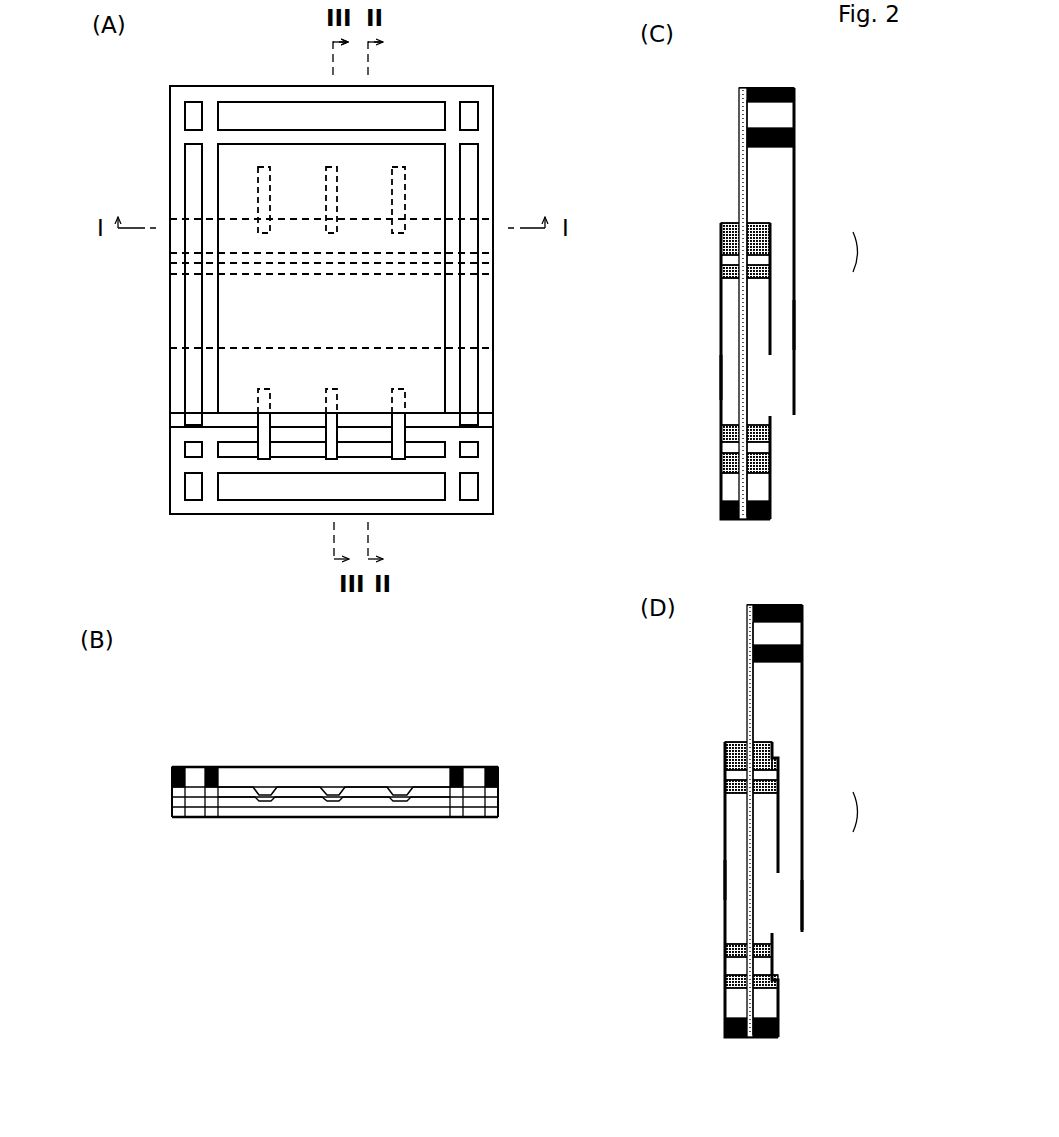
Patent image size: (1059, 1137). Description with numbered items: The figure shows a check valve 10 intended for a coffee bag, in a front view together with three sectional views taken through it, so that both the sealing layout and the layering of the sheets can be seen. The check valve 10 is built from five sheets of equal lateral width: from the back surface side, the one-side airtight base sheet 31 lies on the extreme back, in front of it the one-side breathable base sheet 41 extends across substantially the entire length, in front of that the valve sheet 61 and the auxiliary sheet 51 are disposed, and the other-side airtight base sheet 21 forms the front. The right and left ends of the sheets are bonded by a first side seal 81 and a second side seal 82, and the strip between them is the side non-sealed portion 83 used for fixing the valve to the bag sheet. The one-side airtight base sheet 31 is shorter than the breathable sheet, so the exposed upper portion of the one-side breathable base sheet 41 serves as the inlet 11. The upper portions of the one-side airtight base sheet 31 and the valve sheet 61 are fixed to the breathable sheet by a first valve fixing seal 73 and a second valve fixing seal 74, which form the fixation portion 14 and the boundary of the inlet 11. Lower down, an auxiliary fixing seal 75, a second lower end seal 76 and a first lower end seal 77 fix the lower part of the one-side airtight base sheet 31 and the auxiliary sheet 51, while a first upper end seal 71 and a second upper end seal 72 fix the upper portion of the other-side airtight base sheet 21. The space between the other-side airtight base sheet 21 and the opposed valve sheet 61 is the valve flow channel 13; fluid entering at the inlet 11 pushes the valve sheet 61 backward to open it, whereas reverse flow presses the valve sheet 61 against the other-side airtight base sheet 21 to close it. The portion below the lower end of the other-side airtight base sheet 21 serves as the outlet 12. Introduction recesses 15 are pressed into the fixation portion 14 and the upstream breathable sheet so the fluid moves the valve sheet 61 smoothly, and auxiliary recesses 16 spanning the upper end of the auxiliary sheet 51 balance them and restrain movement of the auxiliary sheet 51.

The check valve 10 is at (493, 86).
The inlet 11 is at (747, 153).
The outlet 12 is at (782, 417).
The valve flow channel 13 is at (432, 767).
The fixation portion 14 is at (875, 532).
The introduction recess 15 is at (258, 167).
The auxiliary recess 16 is at (170, 432).
The other-side airtight base sheet 21 is at (232, 190).
The one-side airtight base sheet 31 is at (420, 817).
The one-side breathable base sheet 41 is at (356, 802).
The auxiliary sheet 51 is at (232, 485).
The valve sheet 61 is at (242, 780).
The first upper end seal 71 is at (425, 88).
The second upper end seal 72 is at (407, 133).
The first valve fixing seal 73 is at (241, 817).
The second valve fixing seal 74 is at (762, 267).
The auxiliary fixing seal 75 is at (297, 433).
The second lower end seal 76 is at (340, 441).
The first lower end seal 77 is at (418, 510).
The first side seal 81 is at (177, 368).
The second side seal 82 is at (212, 390).
The side non-sealed portion 83 is at (243, 112).